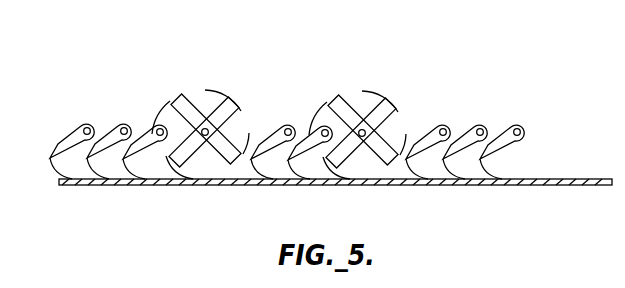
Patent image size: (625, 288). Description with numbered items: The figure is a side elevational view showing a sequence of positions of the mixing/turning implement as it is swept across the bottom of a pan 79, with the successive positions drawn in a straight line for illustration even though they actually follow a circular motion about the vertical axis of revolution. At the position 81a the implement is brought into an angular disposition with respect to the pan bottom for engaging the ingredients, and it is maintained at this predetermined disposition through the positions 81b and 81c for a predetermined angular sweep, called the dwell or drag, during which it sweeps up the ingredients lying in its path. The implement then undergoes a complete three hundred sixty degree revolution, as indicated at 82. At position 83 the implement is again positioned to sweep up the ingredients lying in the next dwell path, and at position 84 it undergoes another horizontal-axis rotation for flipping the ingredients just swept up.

The pan 79 is at (503, 186).
The position of the implement 81a is at (70, 127).
The position of the implement 81b is at (109, 128).
The position of the implement 81c is at (144, 123).
The complete 360 degree revolution 82 is at (226, 90).
The position of the implement 83 is at (270, 131).
The horizontal-axis rotation 84 is at (381, 90).